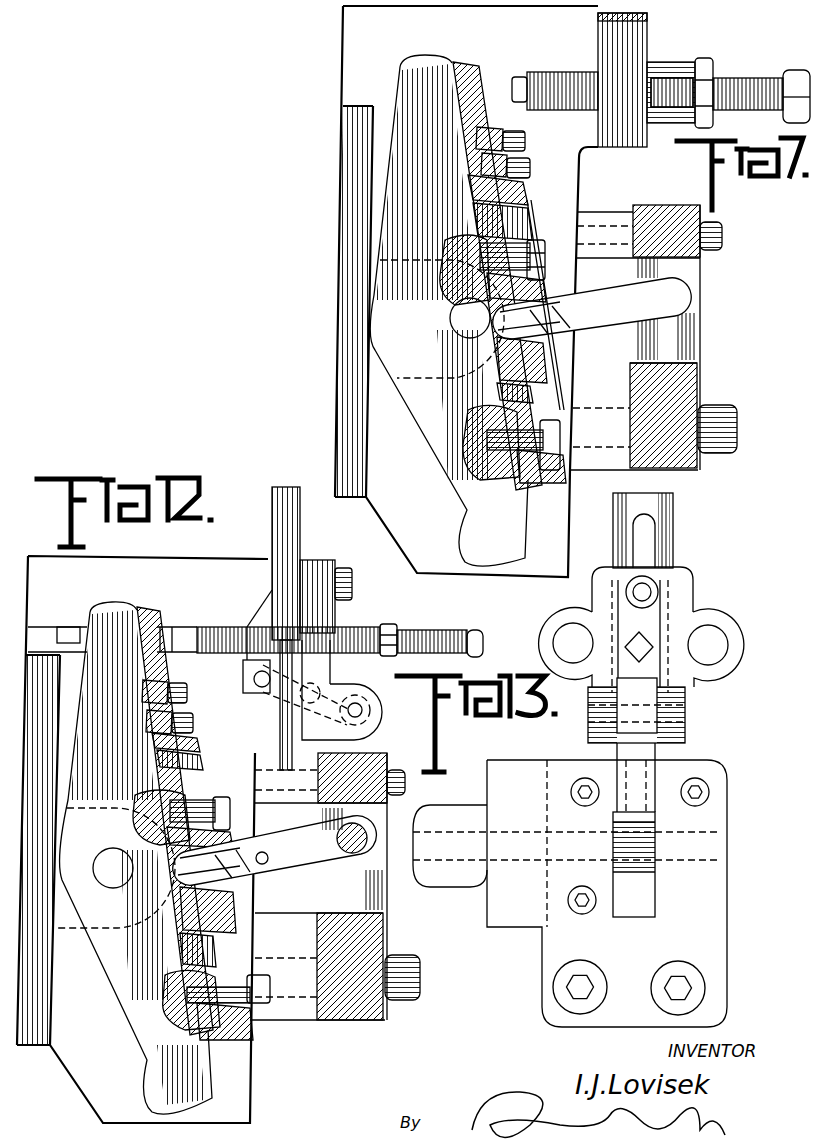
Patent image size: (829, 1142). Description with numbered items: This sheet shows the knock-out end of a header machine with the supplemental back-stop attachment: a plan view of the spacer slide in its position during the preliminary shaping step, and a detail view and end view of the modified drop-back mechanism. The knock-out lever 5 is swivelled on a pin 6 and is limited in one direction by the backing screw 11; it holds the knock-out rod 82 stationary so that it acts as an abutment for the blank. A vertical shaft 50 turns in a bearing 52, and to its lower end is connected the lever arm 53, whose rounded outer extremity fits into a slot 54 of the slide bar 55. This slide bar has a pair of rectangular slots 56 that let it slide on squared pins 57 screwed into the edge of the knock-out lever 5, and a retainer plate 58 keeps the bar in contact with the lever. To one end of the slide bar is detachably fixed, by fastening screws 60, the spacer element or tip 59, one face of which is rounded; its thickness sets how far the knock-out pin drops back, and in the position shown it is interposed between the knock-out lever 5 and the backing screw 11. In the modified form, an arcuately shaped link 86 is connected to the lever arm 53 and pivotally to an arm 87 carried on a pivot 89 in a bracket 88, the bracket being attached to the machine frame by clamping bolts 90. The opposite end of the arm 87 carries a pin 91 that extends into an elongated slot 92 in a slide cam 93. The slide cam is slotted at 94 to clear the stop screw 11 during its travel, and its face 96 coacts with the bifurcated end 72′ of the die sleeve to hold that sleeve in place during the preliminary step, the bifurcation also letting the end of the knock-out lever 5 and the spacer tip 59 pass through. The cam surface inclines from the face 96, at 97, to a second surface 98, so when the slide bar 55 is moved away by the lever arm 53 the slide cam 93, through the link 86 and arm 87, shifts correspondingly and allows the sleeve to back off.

In FIG. 7, the knock-out lever 5 is at (412, 123).
In FIG. 12, the knock-out lever 5 is at (92, 686).
In FIG. 7, the pin 6 is at (412, 322).
In FIG. 12, the pin 6 is at (110, 882).
In FIG. 7, the backing screw 11 is at (780, 74).
In FIG. 12, the backing screw 11 is at (205, 628).
In FIG. 13, the backing screw 11 is at (650, 643).
In FIG. 7, the vertical shaft 50 is at (690, 296).
In FIG. 12, the vertical shaft 50 is at (372, 848).
In FIG. 13, the vertical shaft 50 is at (467, 847).
In FIG. 7, the bearing 52 is at (672, 333).
In FIG. 7, the lever arm 53 is at (616, 292).
In FIG. 12, the lever arm 53 is at (299, 872).
In FIG. 13, the lever arm 53 is at (642, 880).
In FIG. 7, the slot 54 is at (497, 342).
In FIG. 7, the slide bar 55 is at (510, 188).
In FIG. 7, the rectangular slots 56 is at (505, 224).
In FIG. 7, the squared pins 57 is at (478, 241).
In FIG. 7, the retainer plate 58 is at (544, 277).
In FIG. 7, the spacer element or tip 59 is at (473, 78).
In FIG. 12, the spacer element or tip 59 is at (143, 612).
In FIG. 7, the fastening screws 60 is at (531, 162).
In FIG. 12, the bifurcated end of sleeve 72′ is at (167, 627).
In FIG. 12, the knock-out rod 82 is at (63, 627).
In FIG. 12, the arcuately shaped link 86 is at (300, 747).
In FIG. 13, the arcuately shaped link 86 is at (690, 580).
In FIG. 12, the arm 87 is at (345, 695).
In FIG. 13, the arm 87 is at (690, 698).
In FIG. 12, the bracket 88 is at (338, 617).
In FIG. 12, the pivot 89 is at (370, 714).
In FIG. 13, the pivot 89 is at (680, 723).
In FIG. 13, the clamping bolts 90 is at (570, 637).
In FIG. 12, the pin 91 is at (255, 681).
In FIG. 12, the elongated slot 92 is at (258, 692).
In FIG. 12, the slide cam 93 is at (276, 524).
In FIG. 13, the slide cam 93 is at (663, 549).
In FIG. 12, the slot 94 is at (282, 598).
In FIG. 13, the slot 94 is at (644, 537).
In FIG. 12, the face 96 is at (245, 665).
In FIG. 12, the inclined surface 97 is at (258, 609).
In FIG. 12, the second surface 98 is at (272, 545).